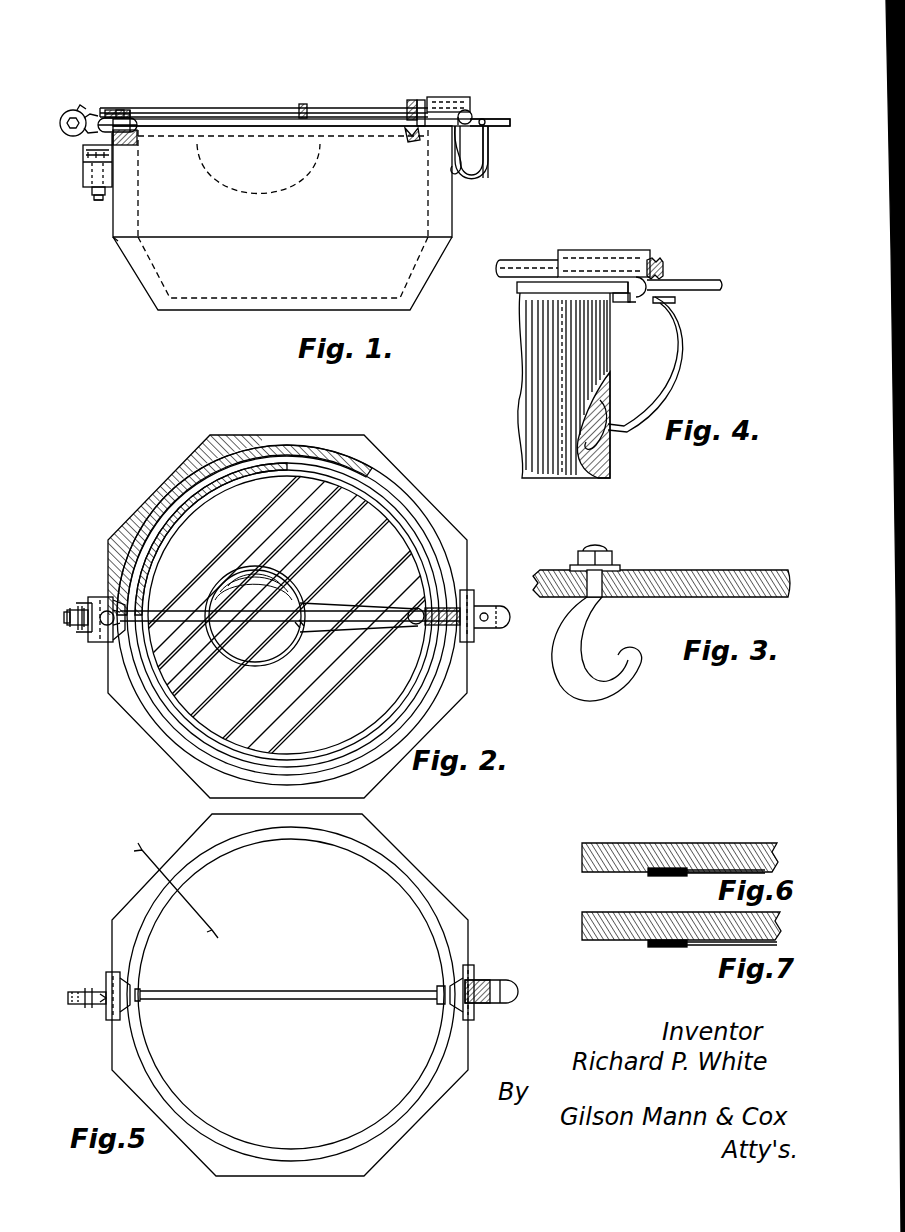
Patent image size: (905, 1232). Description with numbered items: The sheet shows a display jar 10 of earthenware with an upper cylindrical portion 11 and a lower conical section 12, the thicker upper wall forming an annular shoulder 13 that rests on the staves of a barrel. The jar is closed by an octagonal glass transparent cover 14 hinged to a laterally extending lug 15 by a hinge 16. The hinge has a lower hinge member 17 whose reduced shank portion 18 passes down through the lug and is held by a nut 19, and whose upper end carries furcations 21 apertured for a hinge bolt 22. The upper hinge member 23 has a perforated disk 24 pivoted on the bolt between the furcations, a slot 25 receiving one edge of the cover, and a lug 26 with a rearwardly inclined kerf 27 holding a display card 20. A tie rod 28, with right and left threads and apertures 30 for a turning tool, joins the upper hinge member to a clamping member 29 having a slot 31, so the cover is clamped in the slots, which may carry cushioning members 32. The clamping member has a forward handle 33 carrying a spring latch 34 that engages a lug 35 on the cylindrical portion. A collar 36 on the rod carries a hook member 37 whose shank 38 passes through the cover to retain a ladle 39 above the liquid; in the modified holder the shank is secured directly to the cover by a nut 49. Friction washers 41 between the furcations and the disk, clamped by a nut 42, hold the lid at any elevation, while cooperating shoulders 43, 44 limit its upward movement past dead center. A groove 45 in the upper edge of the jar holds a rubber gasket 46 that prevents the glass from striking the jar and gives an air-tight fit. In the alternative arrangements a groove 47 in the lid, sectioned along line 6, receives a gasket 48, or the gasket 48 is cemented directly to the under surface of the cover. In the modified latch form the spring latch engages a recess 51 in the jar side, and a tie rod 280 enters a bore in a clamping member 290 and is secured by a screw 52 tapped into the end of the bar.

In FIG. 1, the display jar 10 is at (126, 268).
In FIG. 2, the display jar 10 is at (392, 476).
In FIG. 4, the display jar 10 is at (509, 378).
In FIG. 1, the upper cylindrical portion 11 is at (440, 226).
In FIG. 4, the upper cylindrical portion 11 is at (612, 350).
In FIG. 1, the lower conical section 12 is at (412, 296).
In FIG. 1, the annular shoulder 13 is at (110, 240).
In FIG. 1, the transparent cover 14 is at (222, 119).
In FIG. 2, the transparent cover 14 is at (372, 440).
In FIG. 3, the transparent cover 14 is at (778, 570).
In FIG. 4, the transparent cover 14 is at (518, 288).
In FIG. 5, the transparent cover 14 is at (475, 916).
In FIG. 6, the transparent cover 14 is at (580, 858).
In FIG. 7, the transparent cover 14 is at (580, 926).
In FIG. 1, the lug 15 is at (91, 191).
In FIG. 1, the hinge 16 is at (60, 123).
In FIG. 2, the hinge 16 is at (80, 630).
In FIG. 1, the lower hinge member 17 is at (82, 150).
In FIG. 1, the reduced shank portion 18 is at (98, 202).
In FIG. 1, the nut 19 is at (93, 198).
In FIG. 1, the display card 20 is at (118, 110).
In FIG. 1, the furcations 21 is at (62, 116).
In FIG. 2, the furcations 21 is at (76, 606).
In FIG. 1, the hinge bolt 22 is at (100, 118).
In FIG. 2, the hinge bolt 22 is at (104, 628).
In FIG. 1, the upper hinge member 23 is at (110, 108).
In FIG. 2, the upper hinge member 23 is at (112, 642).
In FIG. 5, the upper hinge member 23 is at (108, 986).
In FIG. 2, the perforated disk 24 is at (66, 618).
In FIG. 5, the perforated disk 24 is at (70, 992).
In FIG. 1, the slot 25 is at (134, 122).
In FIG. 1, the lug 26 is at (132, 114).
In FIG. 2, the lug 26 is at (113, 630).
In FIG. 1, the kerf 27 is at (124, 110).
In FIG. 1, the tie rod 28 is at (122, 108).
In FIG. 2, the tie rod 28 is at (130, 580).
In FIG. 5, the tie rod 28 is at (332, 990).
In FIG. 1, the clamping member 29 is at (462, 97).
In FIG. 2, the clamping member 29 is at (474, 590).
In FIG. 5, the clamping member 29 is at (476, 972).
In FIG. 1, the apertures 30 is at (300, 106).
In FIG. 2, the apertures 30 is at (290, 616).
In FIG. 1, the slot 31 is at (490, 140).
In FIG. 4, the slot 31 is at (625, 303).
In FIG. 1, the cushioning members 32 is at (473, 112).
In FIG. 4, the cushioning members 32 is at (652, 300).
In FIG. 1, the handle 33 is at (512, 121).
In FIG. 2, the handle 33 is at (490, 606).
In FIG. 4, the handle 33 is at (722, 282).
In FIG. 5, the handle 33 is at (506, 990).
In FIG. 1, the latch 34 is at (486, 176).
In FIG. 4, the latch 34 is at (684, 358).
In FIG. 1, the lug 35 is at (452, 160).
In FIG. 1, the collar 36 is at (411, 100).
In FIG. 2, the collar 36 is at (408, 624).
In FIG. 1, the hook member 37 is at (410, 138).
In FIG. 3, the hook member 37 is at (606, 680).
In FIG. 1, the shank 38 is at (421, 100).
In FIG. 2, the shank 38 is at (418, 630).
In FIG. 3, the shank 38 is at (600, 584).
In FIG. 1, the ladle 39 is at (258, 182).
In FIG. 2, the ladle 39 is at (282, 662).
In FIG. 2, the friction washers 41 is at (64, 614).
In FIG. 2, the nut 42 is at (79, 606).
In FIG. 1, the shoulder 43 is at (80, 108).
In FIG. 1, the shoulder 44 is at (66, 132).
In FIG. 1, the groove 45 is at (126, 145).
In FIG. 1, the gasket 46 is at (134, 131).
In FIG. 2, the gasket 46 is at (405, 500).
In FIG. 5, the groove 47 is at (400, 860).
In FIG. 6, the groove 47 is at (672, 868).
In FIG. 5, the gasket 48 is at (392, 872).
In FIG. 6, the gasket 48 is at (688, 877).
In FIG. 7, the gasket 48 is at (688, 948).
In FIG. 3, the nut 49 is at (610, 556).
In FIG. 4, the recess 51 is at (606, 436).
In FIG. 4, the screw 52 is at (660, 262).
In FIG. 5, the section line 6 is at (178, 883).
In FIG. 4, the tie rod 280 is at (518, 262).
In FIG. 4, the clamping member 290 is at (592, 250).